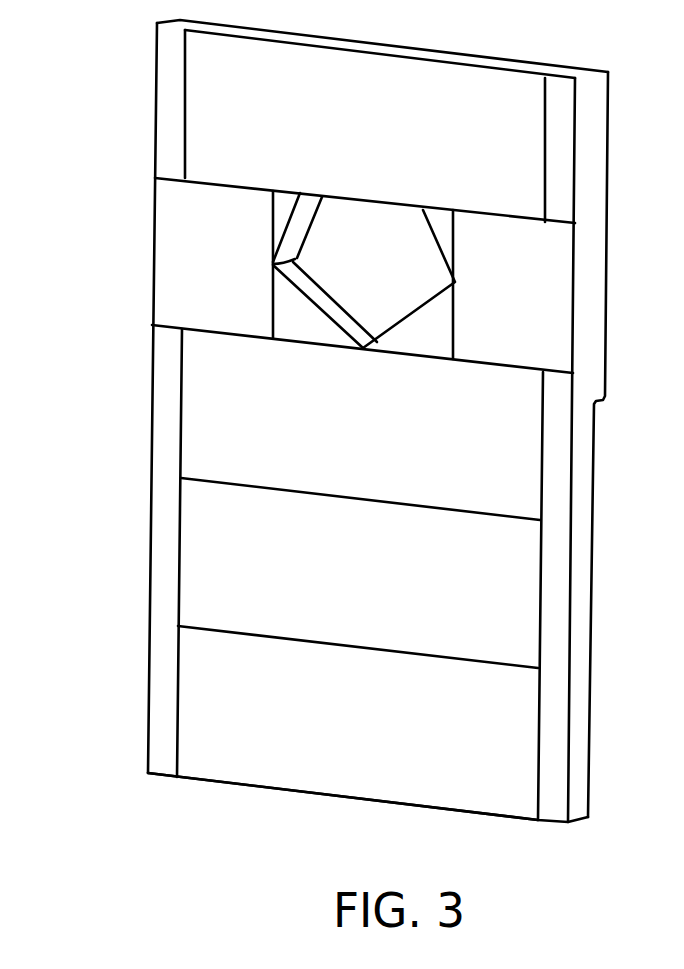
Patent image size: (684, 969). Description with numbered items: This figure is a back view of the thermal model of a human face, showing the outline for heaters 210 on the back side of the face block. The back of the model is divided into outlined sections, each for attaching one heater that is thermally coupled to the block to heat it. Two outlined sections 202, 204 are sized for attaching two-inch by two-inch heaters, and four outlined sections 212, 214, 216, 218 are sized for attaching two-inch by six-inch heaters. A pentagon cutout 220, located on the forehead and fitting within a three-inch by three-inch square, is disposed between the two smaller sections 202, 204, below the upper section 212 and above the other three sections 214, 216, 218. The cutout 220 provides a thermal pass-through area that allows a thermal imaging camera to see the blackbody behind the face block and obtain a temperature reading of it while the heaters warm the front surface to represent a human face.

The outline for heaters 210 is at (288, 803).
The heater outlined section 212 is at (213, 113).
The heater outlined section 202 is at (0, 180).
The heater outlined section 204 is at (542, 298).
The pentagon cutout 220 is at (323, 250).
The heater outlined section 214 is at (232, 405).
The heater outlined section 216 is at (232, 533).
The heater outlined section 218 is at (232, 653).